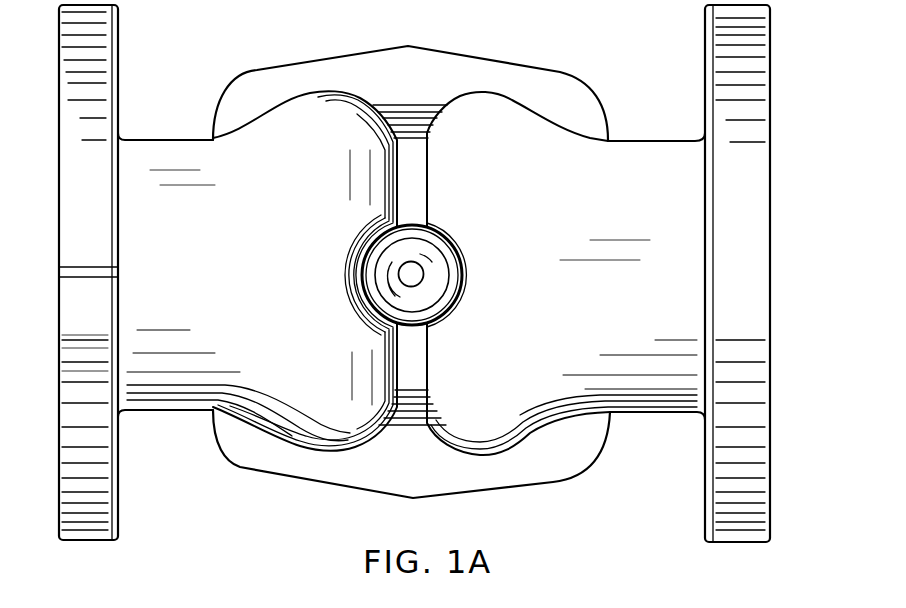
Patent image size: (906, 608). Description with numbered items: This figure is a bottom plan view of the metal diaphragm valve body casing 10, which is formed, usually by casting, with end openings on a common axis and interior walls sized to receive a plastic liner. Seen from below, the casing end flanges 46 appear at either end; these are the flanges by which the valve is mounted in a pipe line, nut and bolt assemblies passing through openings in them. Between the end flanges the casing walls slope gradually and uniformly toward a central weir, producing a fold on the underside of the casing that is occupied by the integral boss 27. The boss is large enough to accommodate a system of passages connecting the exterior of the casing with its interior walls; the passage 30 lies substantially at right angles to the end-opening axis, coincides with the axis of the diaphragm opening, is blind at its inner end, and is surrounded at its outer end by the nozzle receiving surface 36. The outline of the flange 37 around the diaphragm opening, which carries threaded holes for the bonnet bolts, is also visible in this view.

The valve body casing 10 is at (637, 98).
The integral boss 27 is at (370, 268).
The passage 30 is at (417, 283).
The nozzle receiving surface 36 is at (427, 257).
The flange 37 is at (311, 468).
The casing end flanges 46 is at (722, 1).